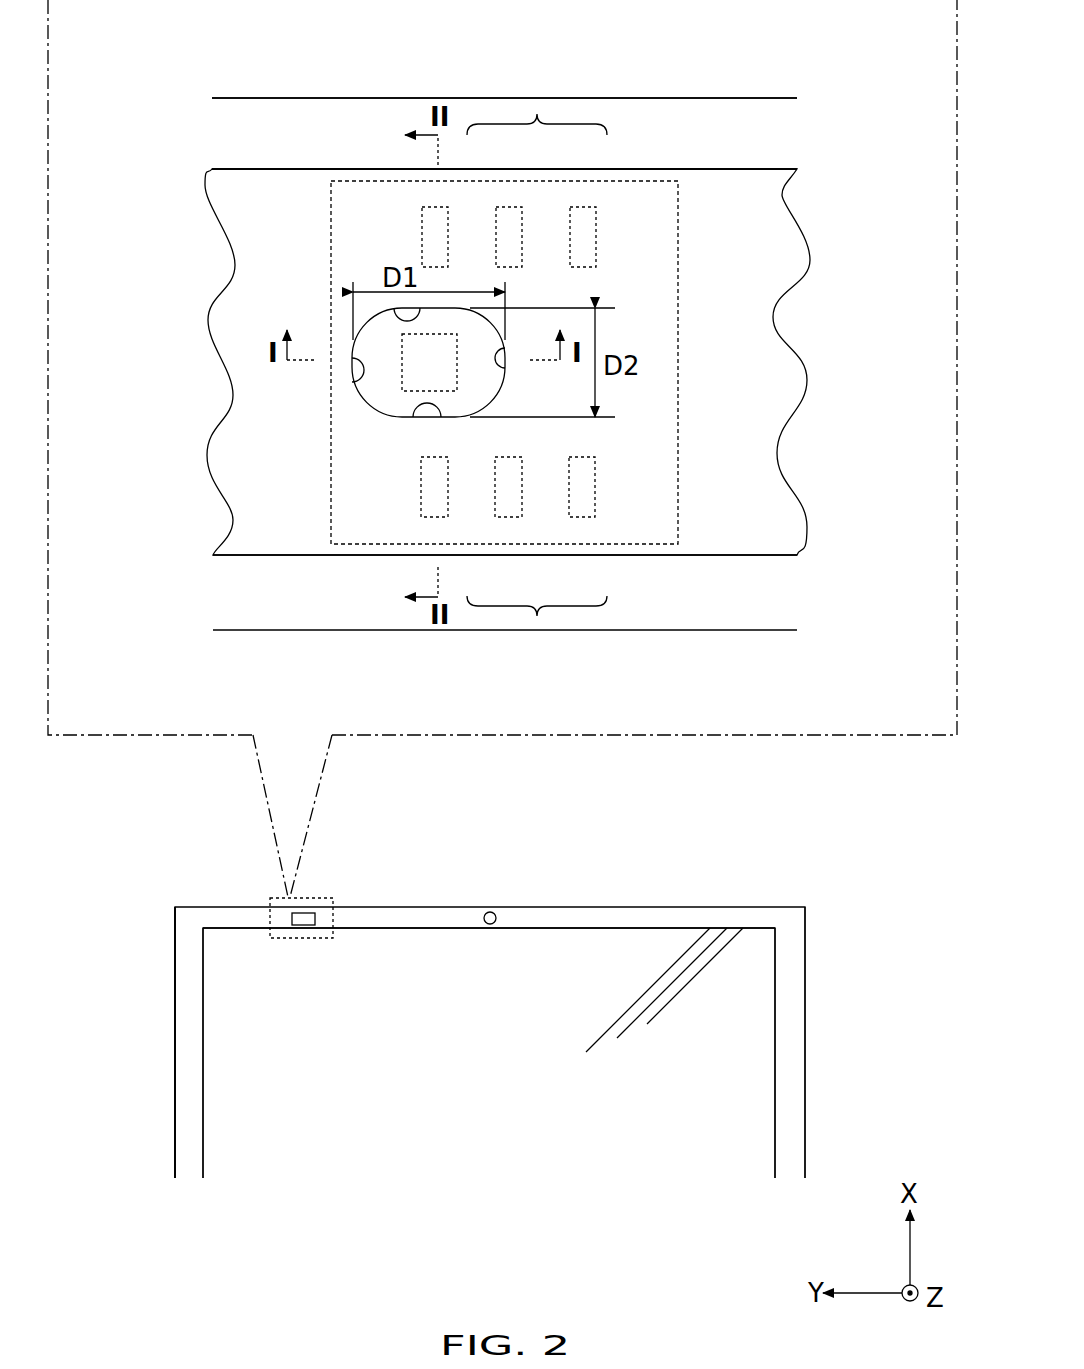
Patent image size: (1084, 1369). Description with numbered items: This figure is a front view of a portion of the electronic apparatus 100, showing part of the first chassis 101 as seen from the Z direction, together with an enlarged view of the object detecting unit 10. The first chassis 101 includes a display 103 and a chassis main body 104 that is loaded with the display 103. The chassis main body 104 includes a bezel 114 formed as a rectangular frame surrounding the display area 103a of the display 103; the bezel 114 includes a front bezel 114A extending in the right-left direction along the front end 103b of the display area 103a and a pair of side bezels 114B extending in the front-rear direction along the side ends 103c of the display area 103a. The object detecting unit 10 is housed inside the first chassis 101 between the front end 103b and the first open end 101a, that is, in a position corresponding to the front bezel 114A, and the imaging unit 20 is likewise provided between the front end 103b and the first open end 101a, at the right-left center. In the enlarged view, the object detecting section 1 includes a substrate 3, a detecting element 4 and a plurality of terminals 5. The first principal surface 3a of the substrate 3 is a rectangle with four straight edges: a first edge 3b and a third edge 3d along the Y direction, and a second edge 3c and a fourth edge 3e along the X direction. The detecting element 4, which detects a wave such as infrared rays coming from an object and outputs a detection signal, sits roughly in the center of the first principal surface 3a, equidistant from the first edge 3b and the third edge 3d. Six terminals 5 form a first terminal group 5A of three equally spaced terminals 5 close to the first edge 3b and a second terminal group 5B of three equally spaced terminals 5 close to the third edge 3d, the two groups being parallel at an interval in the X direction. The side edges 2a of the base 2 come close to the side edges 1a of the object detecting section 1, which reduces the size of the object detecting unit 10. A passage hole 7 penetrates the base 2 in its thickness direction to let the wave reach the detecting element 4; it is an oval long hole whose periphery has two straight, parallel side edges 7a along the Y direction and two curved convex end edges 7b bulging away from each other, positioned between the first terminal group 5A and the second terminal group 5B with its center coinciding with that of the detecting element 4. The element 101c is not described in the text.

The electronic apparatus 100 is at (712, 68).
The first chassis 101 is at (745, 92).
The first open end 101a is at (608, 97).
The housing left side wall 101c is at (187, 1022).
The display 103 is at (752, 1072).
The display area 103a is at (489, 1053).
The front end 103b is at (300, 630).
The side end 103c is at (203, 1063).
The chassis main body 104 is at (175, 1103).
The bezel 114 is at (780, 151).
The front bezel 114A is at (433, 917).
The side bezel 114B is at (190, 964).
The object detecting unit 10 is at (800, 184).
The imaging unit 20 is at (493, 912).
The object detecting section 1 is at (680, 249).
The side edge 1a is at (658, 174).
The base 2 is at (790, 382).
The side edge 2a is at (738, 169).
The substrate 3 is at (652, 466).
The first principal surface 3a is at (504, 362).
The first edge 3b is at (384, 180).
The second edge 3c is at (680, 360).
The third edge 3d is at (366, 548).
The fourth edge 3e is at (330, 505).
The detecting element 4 is at (405, 386).
The terminal 5 is at (430, 217).
The first terminal group 5A is at (537, 114).
The second terminal group 5B is at (537, 616).
The passage hole 7 is at (494, 360).
The side edge 7a is at (412, 316).
The end edge 7b is at (368, 372).